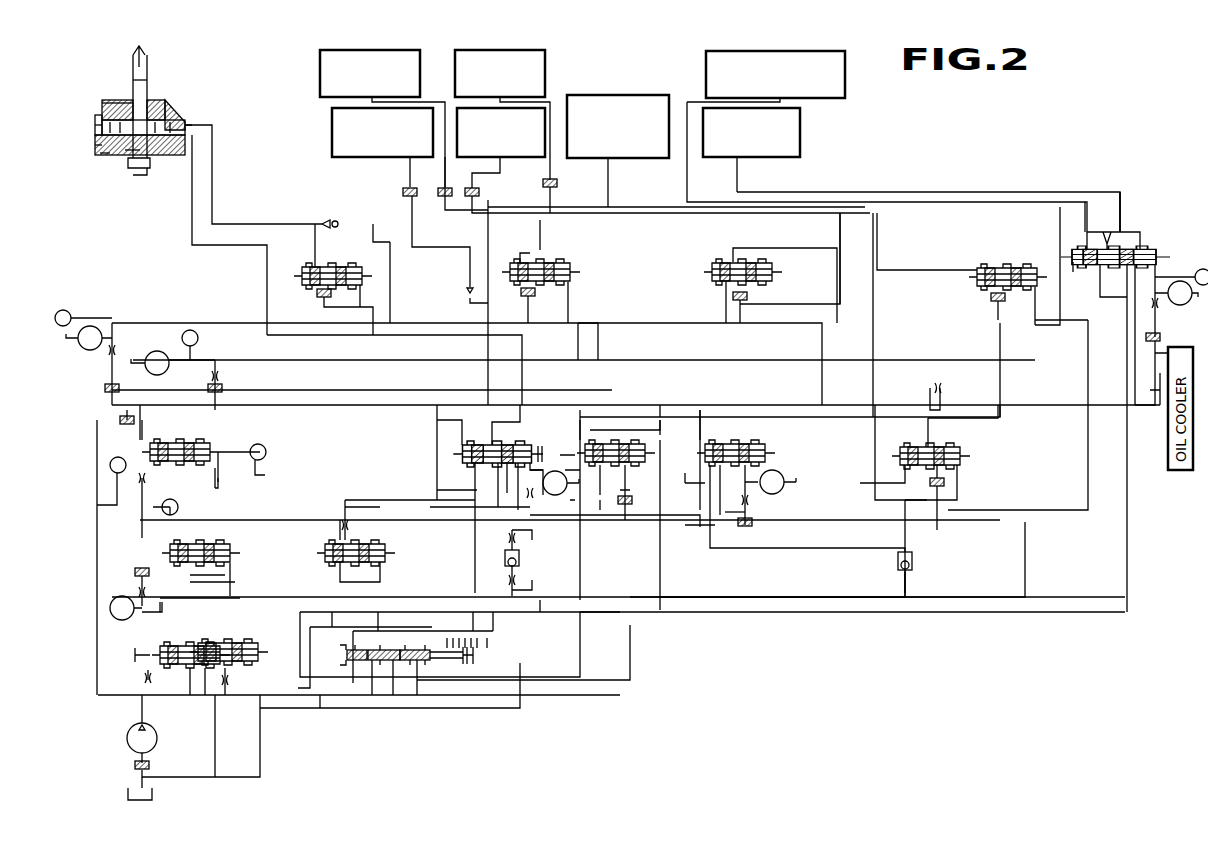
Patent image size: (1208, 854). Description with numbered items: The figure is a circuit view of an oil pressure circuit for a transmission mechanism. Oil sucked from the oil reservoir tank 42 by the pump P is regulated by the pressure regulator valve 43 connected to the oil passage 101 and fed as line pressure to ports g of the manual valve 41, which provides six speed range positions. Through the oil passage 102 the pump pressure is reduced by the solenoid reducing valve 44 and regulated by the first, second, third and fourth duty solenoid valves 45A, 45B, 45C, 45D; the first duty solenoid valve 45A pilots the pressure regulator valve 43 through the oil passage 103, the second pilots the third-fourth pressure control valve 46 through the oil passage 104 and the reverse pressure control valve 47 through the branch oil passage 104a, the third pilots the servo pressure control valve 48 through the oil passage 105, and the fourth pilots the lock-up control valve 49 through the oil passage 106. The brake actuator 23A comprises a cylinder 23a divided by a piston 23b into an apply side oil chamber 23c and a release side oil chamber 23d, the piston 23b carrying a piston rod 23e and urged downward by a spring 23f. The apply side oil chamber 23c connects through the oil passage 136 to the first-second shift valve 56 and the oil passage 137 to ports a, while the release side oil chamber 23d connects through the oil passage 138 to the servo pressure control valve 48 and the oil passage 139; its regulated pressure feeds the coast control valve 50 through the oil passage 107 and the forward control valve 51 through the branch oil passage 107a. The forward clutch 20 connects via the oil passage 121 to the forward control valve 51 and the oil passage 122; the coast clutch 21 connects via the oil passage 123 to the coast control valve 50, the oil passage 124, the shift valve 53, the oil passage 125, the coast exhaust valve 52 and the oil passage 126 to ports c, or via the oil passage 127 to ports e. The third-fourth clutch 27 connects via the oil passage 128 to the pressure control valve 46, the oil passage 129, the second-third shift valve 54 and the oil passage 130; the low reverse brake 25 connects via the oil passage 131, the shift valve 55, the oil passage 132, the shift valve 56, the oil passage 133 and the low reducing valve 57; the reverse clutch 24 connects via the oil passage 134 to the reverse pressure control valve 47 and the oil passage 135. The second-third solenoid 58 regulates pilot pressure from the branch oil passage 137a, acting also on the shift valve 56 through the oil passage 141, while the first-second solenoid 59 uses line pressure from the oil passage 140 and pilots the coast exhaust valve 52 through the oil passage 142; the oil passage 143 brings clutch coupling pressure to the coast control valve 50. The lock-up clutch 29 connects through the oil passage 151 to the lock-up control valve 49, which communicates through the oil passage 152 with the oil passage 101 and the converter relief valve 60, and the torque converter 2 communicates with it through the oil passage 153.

The torque converter 2 is at (845, 65).
The forward clutch 20 is at (320, 62).
The coast clutch 21 is at (455, 161).
The actuator 23A is at (198, 99).
The cylinder 23a is at (102, 105).
The piston 23b is at (126, 156).
The apply side oil chamber 23c is at (95, 145).
The release side oil chamber 23d is at (95, 128).
The piston rod 23e is at (133, 85).
The spring 23f is at (100, 155).
The reverse clutch 24 is at (332, 144).
The low reverse brake 25 is at (642, 94).
The 3-4 clutch 27 is at (545, 60).
The lock-up clutch 29 is at (800, 135).
The manual valve 41 is at (445, 668).
The oil reservoir tank 42 is at (155, 797).
The pressure regulator valve 43 is at (225, 638).
The solenoid reducing valve 44 is at (170, 462).
The first duty solenoid valve 45A is at (123, 583).
The second duty solenoid valve 45B is at (178, 366).
The third duty solenoid valve 45C is at (83, 342).
The fourth duty solenoid valve 45D is at (1176, 304).
The 3-4 pressure control valve 46 is at (972, 284).
The reverse pressure control valve 47 is at (575, 262).
The servo pressure control valve 48 is at (310, 290).
The lock-up control valve 49 is at (1150, 240).
The coast control valve 50 is at (977, 452).
The forward control valve 51 is at (700, 263).
The coast exhaust valve 52 is at (590, 415).
The shift valve 53 is at (915, 570).
The 2-3 shift valve 54 is at (770, 460).
The shift valve 55 is at (520, 552).
The 1-2 shift valve 56 is at (540, 440).
The low reducing valve 57 is at (390, 550).
The 2-3 solenoid 58 is at (783, 475).
The 1-2 solenoid 59 is at (565, 492).
The converter relief valve 60 is at (238, 548).
The oil passage 101 is at (320, 710).
The oil passage 102 is at (95, 600).
The oil passage 103 is at (129, 620).
The oil passage 104 is at (318, 360).
The oil passage 104a is at (578, 282).
The oil passage 105 is at (220, 318).
The oil passage 106 is at (1160, 270).
The oil passage 107 is at (395, 300).
The branch oil passage 107a is at (725, 300).
The oil passage 121 is at (517, 222).
The oil passage 122 is at (790, 308).
The oil passage 123 is at (478, 183).
The oil passage 124 is at (935, 540).
The oil passage 125 is at (805, 556).
The oil passage 126 is at (630, 650).
The oil passage 127 is at (790, 598).
The oil passage 128 is at (555, 172).
The oil passage 129 is at (1005, 385).
The oil passage 130 is at (660, 525).
The oil passage 131 is at (608, 190).
The oil passage 132 is at (540, 505).
The oil passage 133 is at (408, 492).
The oil passage 134 is at (440, 252).
The oil passage 135 is at (585, 345).
The oil passage 136 is at (222, 250).
The oil passage 137 is at (470, 530).
The branch oil passage 137a is at (752, 512).
The oil passage 138 is at (267, 228).
The oil passage 139 is at (375, 400).
The oil passage 140 is at (583, 703).
The oil passage 141 is at (680, 387).
The oil passage 142 is at (560, 453).
The oil passage 143 is at (878, 392).
The oil passage 151 is at (915, 193).
The oil passage 152 is at (1127, 580).
The oil passage 153 is at (687, 198).
The pump P is at (157, 738).